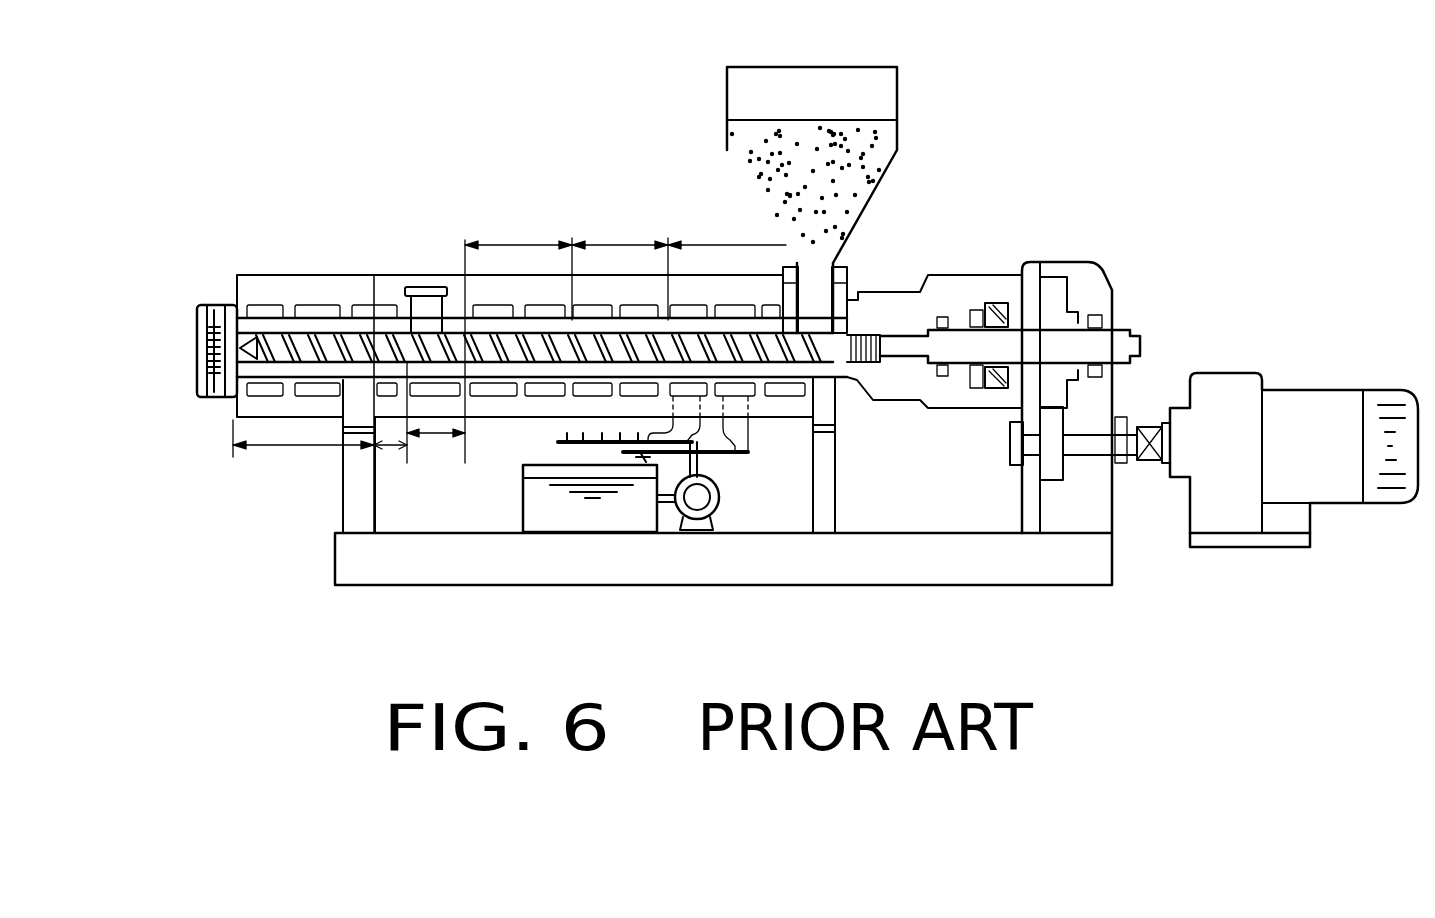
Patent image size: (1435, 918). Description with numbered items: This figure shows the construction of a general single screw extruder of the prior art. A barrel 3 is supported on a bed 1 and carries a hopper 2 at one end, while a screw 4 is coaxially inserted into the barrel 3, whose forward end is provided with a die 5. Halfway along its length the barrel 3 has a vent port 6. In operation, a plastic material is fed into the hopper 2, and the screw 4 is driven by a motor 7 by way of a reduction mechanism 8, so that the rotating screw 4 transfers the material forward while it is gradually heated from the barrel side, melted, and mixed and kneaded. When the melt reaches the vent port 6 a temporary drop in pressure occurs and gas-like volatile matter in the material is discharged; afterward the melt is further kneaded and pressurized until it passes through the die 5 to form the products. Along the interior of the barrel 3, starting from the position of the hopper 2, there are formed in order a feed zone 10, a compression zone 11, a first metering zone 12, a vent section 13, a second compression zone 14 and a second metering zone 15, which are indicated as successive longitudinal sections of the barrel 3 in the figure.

The bed 1 is at (335, 566).
The hopper 2 is at (897, 90).
The barrel 3 is at (372, 335).
The screw 4 is at (465, 375).
The die 5 is at (207, 350).
The vent port 6 is at (427, 286).
The motor 7 is at (1312, 395).
The reduction mechanism 8 is at (1080, 290).
The feed zone 10 is at (718, 245).
The compression zone 11 is at (621, 245).
The first metering zone 12 is at (520, 245).
The vent section 13 is at (440, 437).
The second compression zone 14 is at (392, 452).
The second metering zone 15 is at (273, 448).